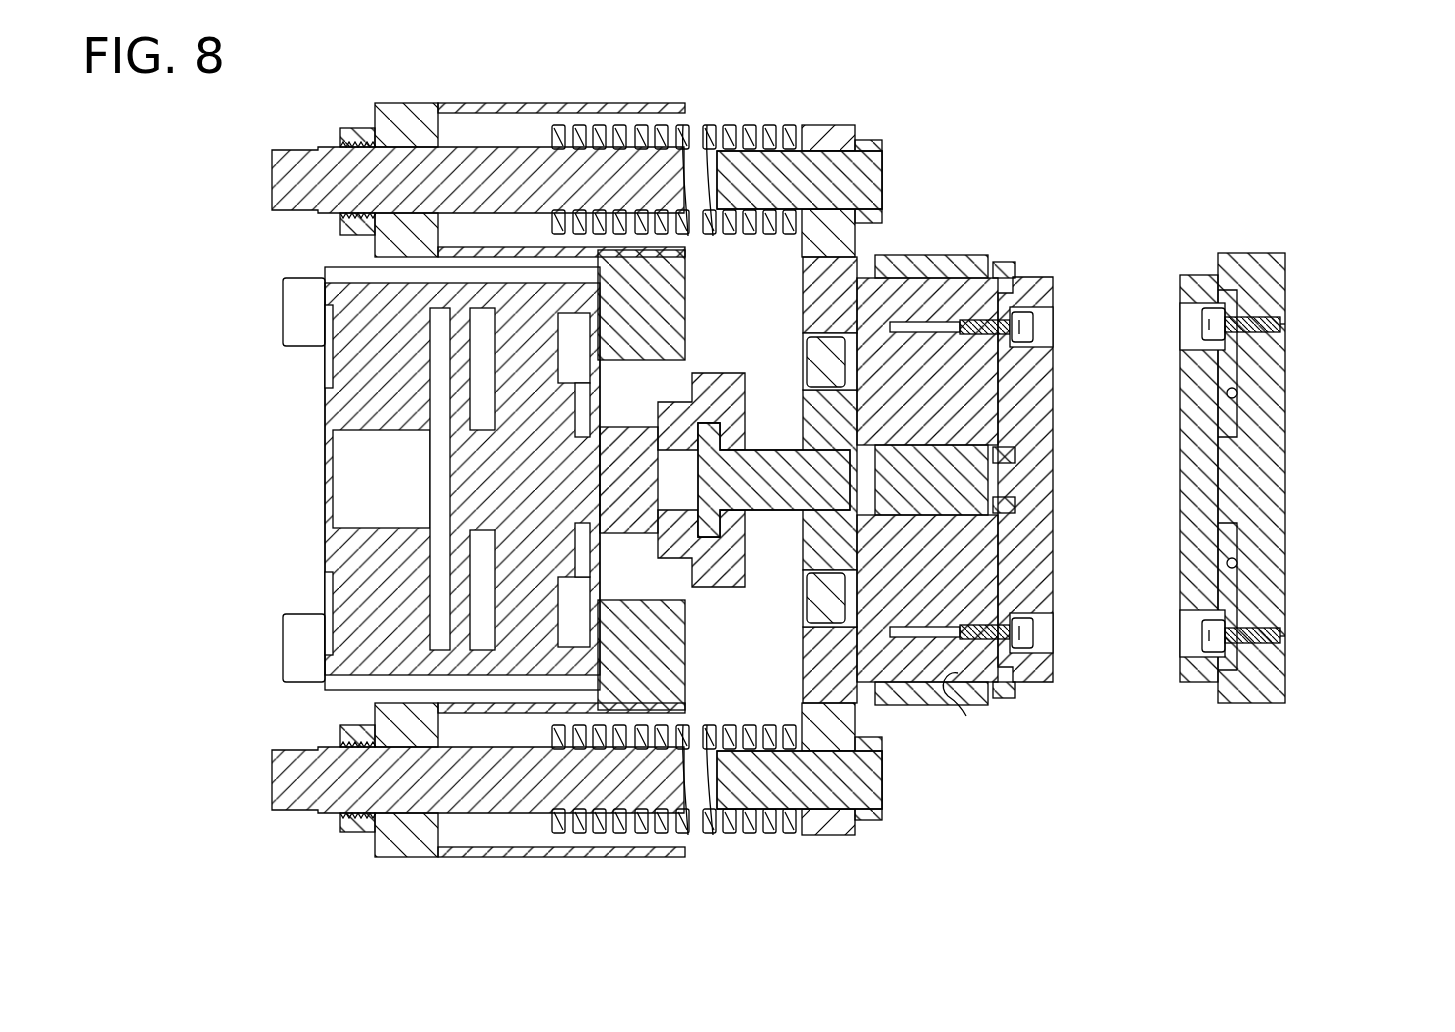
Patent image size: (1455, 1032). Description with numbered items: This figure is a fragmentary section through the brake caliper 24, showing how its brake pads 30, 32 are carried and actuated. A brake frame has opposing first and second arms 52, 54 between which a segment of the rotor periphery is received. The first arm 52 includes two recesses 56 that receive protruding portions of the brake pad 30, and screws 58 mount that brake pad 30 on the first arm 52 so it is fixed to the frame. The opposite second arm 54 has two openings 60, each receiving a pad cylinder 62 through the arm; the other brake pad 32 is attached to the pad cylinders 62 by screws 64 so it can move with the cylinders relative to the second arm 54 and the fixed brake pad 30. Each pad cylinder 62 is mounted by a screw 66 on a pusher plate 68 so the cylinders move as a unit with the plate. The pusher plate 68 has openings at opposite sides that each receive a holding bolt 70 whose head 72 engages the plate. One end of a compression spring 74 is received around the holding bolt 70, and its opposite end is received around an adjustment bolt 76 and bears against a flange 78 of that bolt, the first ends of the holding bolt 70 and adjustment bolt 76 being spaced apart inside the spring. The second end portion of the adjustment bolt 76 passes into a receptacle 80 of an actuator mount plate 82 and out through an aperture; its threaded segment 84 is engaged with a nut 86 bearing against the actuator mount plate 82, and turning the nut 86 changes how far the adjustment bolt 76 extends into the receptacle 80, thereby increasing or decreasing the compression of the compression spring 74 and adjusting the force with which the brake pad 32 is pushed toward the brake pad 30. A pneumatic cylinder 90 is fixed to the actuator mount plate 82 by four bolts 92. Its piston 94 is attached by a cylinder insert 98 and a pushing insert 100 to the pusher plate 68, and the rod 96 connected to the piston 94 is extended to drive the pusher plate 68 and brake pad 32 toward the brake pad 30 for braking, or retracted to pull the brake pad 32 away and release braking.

The brake caliper 24 is at (1402, 128).
The brake pad 30 is at (1180, 437).
The brake pad 32 is at (1052, 410).
The first arm 52 is at (1265, 255).
The second arm 54 is at (962, 694).
The recesses 56 is at (1236, 393).
The screws 58 is at (1200, 320).
The openings 60 is at (962, 278).
The pad cylinder 62 is at (925, 286).
The screws 64 is at (1034, 318).
The screw 66 is at (805, 352).
The pusher plate 68 is at (865, 718).
The holding bolt 70 is at (760, 479).
The head 72 is at (884, 185).
The compression spring 74 is at (776, 124).
The adjustment bolt 76 is at (501, 142).
The flange 78 is at (560, 124).
The receptacle 80 is at (476, 102).
The actuator mount plate 82 is at (695, 691).
The threaded segment 84 is at (356, 128).
The nut 86 is at (347, 133).
The pneumatic cylinder 90 is at (406, 478).
The bolts 92 is at (290, 284).
The piston 94 is at (452, 349).
The rod 96 is at (478, 553).
The cylinder insert 98 is at (731, 380).
The pushing insert 100 is at (771, 503).